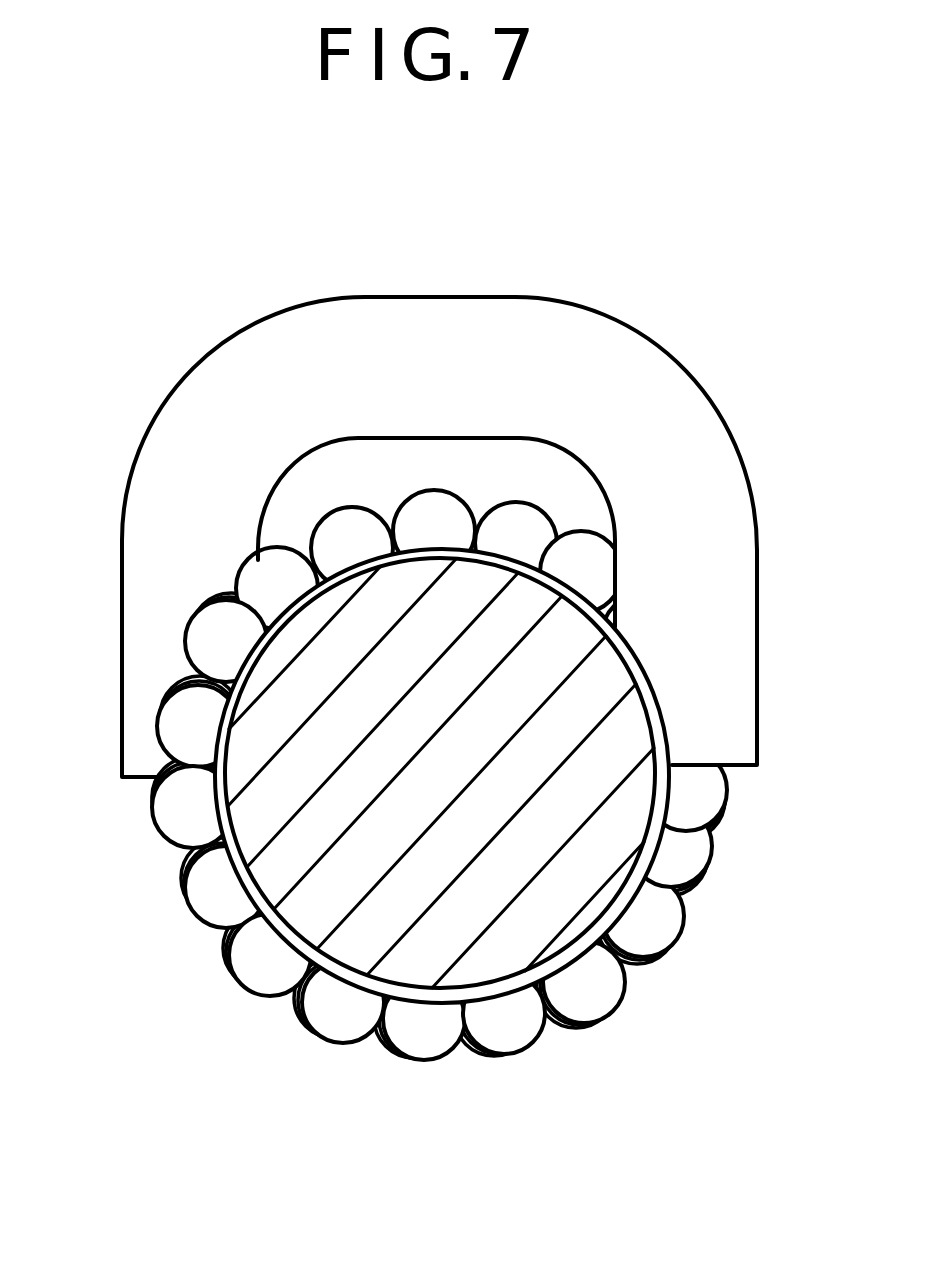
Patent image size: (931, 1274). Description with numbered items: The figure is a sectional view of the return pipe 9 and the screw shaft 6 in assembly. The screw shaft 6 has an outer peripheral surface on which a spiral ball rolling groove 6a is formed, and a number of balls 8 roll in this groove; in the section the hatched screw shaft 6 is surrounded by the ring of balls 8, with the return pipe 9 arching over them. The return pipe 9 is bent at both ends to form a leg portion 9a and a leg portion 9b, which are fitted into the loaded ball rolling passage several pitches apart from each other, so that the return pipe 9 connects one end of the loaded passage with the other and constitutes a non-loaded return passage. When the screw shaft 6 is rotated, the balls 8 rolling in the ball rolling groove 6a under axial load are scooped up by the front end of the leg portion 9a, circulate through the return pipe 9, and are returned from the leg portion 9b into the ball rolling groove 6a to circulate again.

The return pipe 9 is at (439, 480).
The leg portion 9a is at (165, 512).
The leg portion 9b is at (750, 588).
The balls 8 is at (700, 851).
The ball rolling groove 6a is at (622, 893).
The screw shaft 6 is at (547, 913).